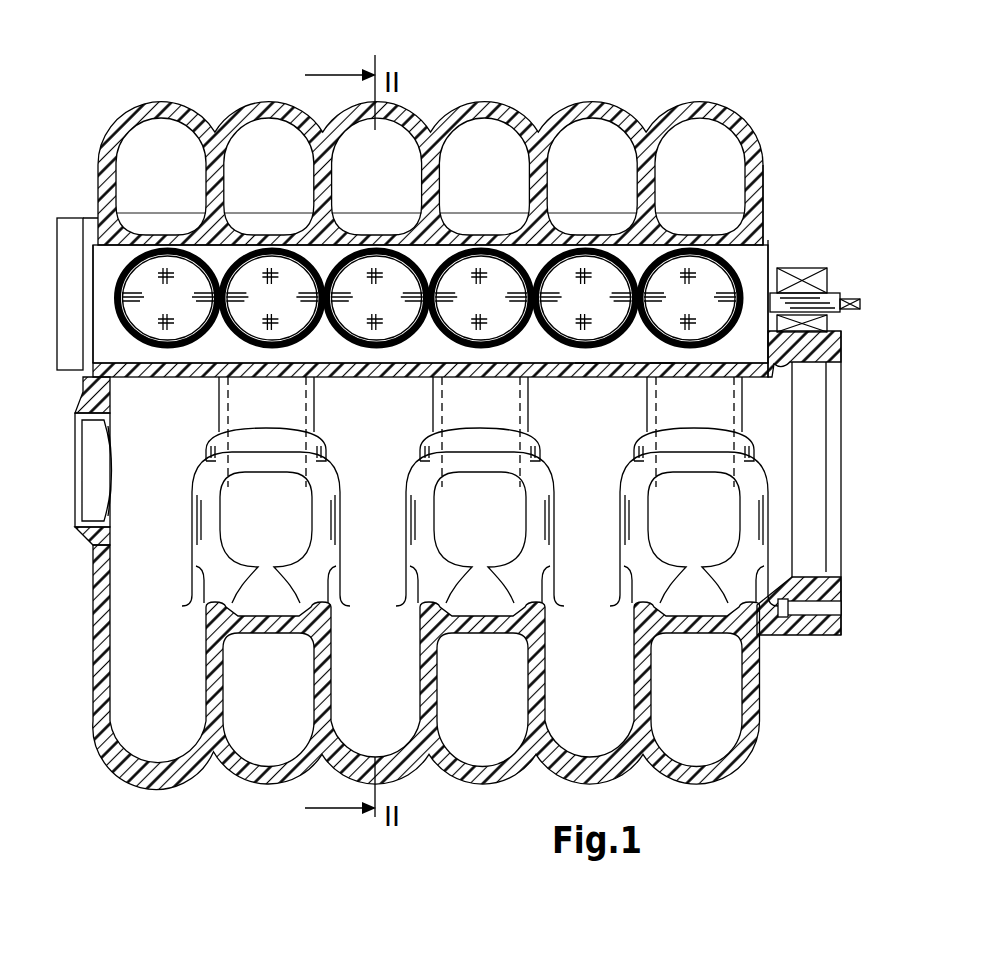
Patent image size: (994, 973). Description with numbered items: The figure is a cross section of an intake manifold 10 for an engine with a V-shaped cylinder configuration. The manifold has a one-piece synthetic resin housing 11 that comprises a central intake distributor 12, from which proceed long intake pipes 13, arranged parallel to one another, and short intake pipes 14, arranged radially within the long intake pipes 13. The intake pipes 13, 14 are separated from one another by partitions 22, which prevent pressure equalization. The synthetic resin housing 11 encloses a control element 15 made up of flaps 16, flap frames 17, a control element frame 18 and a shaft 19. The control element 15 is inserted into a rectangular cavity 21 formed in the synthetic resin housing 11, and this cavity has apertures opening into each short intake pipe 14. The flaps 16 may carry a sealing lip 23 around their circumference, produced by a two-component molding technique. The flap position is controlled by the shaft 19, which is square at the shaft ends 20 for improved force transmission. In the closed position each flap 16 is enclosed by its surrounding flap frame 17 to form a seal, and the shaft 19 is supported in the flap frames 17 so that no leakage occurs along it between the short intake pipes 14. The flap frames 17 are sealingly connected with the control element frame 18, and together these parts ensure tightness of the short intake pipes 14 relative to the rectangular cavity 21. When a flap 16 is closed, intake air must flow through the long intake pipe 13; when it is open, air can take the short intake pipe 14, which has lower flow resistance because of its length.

The intake manifold 10 is at (446, 395).
The synthetic resin housing 11 is at (772, 134).
The central intake distributor 12 is at (383, 506).
The long intake pipes 13 is at (702, 128).
The short intake pipes 14 is at (460, 393).
The control element 15 is at (430, 193).
The flaps 16 is at (722, 282).
The flap frames 17 is at (660, 347).
The control element frame 18 is at (750, 352).
The shaft 19 is at (828, 290).
The shaft ends 20 is at (858, 300).
The rectangular cavity 21 is at (107, 352).
The partitions 22 is at (648, 200).
The sealing lip 23 is at (653, 268).